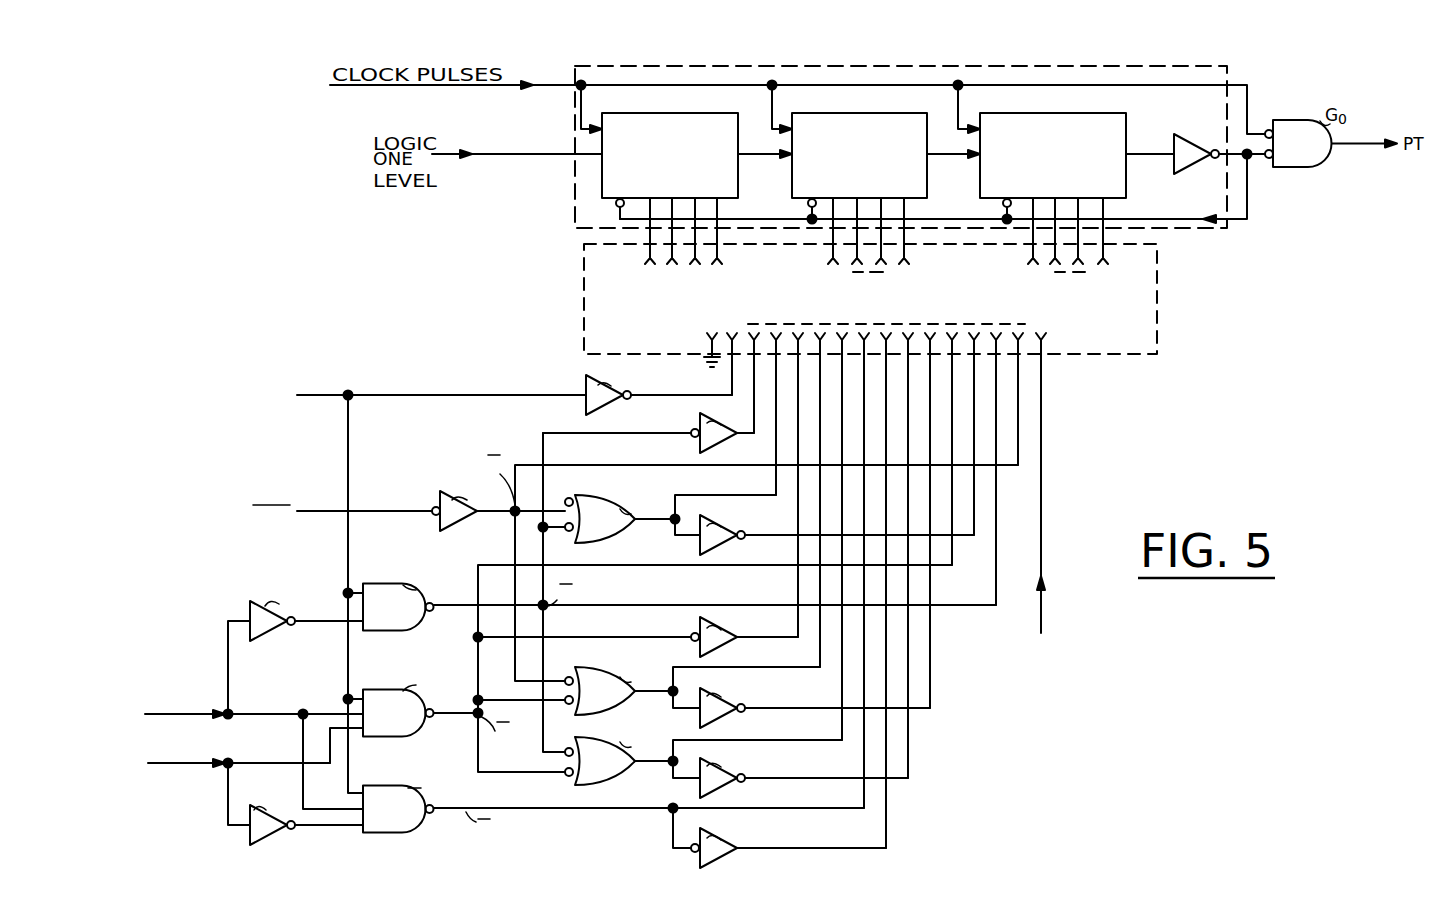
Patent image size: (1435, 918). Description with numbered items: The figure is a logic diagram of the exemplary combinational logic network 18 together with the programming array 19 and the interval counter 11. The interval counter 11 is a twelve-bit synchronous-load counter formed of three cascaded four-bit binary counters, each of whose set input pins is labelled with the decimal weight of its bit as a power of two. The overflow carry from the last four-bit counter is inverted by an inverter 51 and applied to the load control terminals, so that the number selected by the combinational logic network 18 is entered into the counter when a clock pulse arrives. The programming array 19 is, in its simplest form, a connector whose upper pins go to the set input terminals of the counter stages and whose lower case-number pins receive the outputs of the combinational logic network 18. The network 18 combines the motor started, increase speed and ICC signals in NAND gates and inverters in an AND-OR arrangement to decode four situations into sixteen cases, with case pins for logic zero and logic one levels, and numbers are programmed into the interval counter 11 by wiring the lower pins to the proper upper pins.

The interval counter 11 is at (586, 197).
The combinational logic network 18 is at (244, 862).
The programming array 19 is at (1162, 307).
The inverter 51 is at (1201, 147).